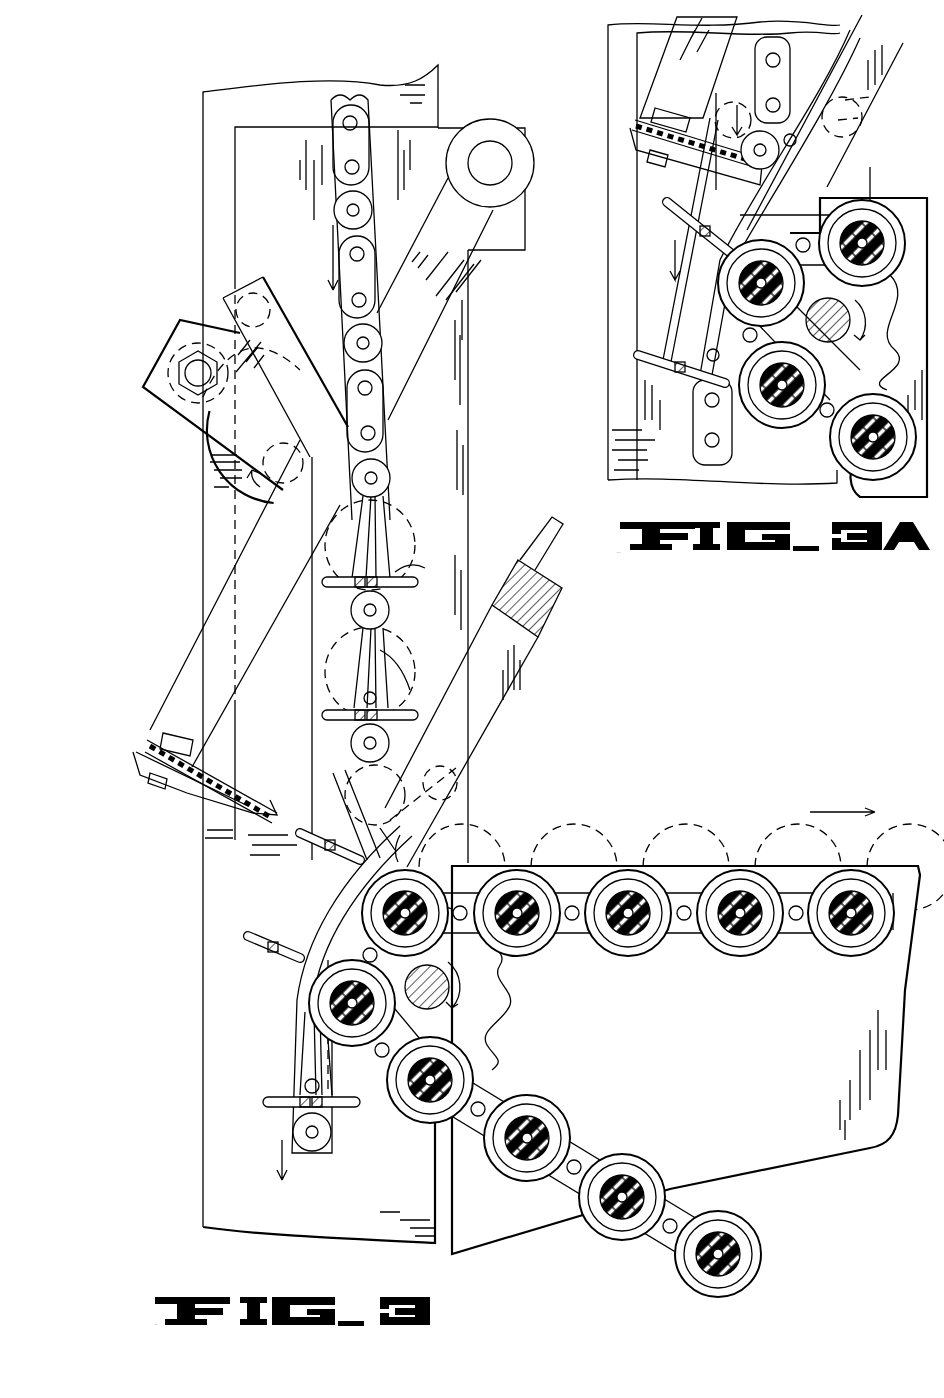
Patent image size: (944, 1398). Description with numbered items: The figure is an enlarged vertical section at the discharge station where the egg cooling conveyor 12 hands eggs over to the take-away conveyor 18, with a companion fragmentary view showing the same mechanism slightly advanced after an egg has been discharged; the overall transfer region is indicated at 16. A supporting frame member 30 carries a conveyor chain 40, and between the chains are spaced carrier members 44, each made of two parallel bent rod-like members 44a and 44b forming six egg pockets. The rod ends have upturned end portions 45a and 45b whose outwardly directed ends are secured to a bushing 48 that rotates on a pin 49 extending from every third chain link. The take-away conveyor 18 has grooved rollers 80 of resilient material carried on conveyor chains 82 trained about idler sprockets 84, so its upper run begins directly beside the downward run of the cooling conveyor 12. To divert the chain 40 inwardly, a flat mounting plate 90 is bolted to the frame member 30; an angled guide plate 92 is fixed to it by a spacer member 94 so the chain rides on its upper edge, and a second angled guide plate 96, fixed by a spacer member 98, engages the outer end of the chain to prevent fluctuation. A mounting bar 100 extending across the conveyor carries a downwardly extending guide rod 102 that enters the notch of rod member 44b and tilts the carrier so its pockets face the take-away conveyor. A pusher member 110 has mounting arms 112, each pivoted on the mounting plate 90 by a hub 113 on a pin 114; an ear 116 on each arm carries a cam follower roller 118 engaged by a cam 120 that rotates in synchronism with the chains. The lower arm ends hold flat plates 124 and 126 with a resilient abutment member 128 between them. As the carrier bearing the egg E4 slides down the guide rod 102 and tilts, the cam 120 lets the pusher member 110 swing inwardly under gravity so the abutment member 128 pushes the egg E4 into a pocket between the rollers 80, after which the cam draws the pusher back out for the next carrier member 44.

In FIG. 3, the egg cooling conveyor 12 is at (408, 548).
In FIG. 3A, the egg cooling conveyor 12 is at (670, 303).
In FIG. 3, the transfer assembly 16 is at (578, 680).
In FIG. 3A, the transfer assembly 16 is at (890, 147).
In FIG. 3, the take-away conveyor 18 is at (760, 890).
In FIG. 3A, the take-away conveyor 18 is at (915, 185).
In FIG. 3, the supporting frame member 30 is at (205, 113).
In FIG. 3A, the supporting frame member 30 is at (612, 45).
In FIG. 3, the conveyor chain 40 is at (333, 110).
In FIG. 3A, the conveyor chain 40 is at (790, 59).
In FIG. 3, the carrier member 44 is at (422, 582).
In FIG. 3A, the carrier member 44 is at (667, 316).
In FIG. 3, the rod-like member 44a is at (322, 582).
In FIG. 3A, the rod-like member 44a is at (680, 222).
In FIG. 3, the rod-like member 44b is at (258, 993).
In FIG. 3A, the rod-like member 44b is at (700, 236).
In FIG. 3, the upturned end portion 45a is at (352, 526).
In FIG. 3, the upturned end portion 45b is at (382, 526).
In FIG. 3, the bushing 48 is at (370, 205).
In FIG. 3A, the bushing 48 is at (700, 412).
In FIG. 3, the pin 49 is at (356, 212).
In FIG. 3A, the pin 49 is at (778, 148).
In FIG. 3, the grooved roller 80 is at (748, 955).
In FIG. 3A, the grooved roller 80 is at (815, 365).
In FIG. 3, the conveyor chain 82 is at (572, 935).
In FIG. 3A, the conveyor chain 82 is at (825, 420).
In FIG. 3, the idler sprocket 84 is at (500, 1005).
In FIG. 3A, the idler sprocket 84 is at (900, 334).
In FIG. 3, the mounting plate 90 is at (240, 170).
In FIG. 3A, the mounting plate 90 is at (637, 78).
In FIG. 3, the angled guide plate 92 is at (488, 722).
In FIG. 3A, the angled guide plate 92 is at (870, 92).
In FIG. 3, the spacer member 94 is at (470, 770).
In FIG. 3A, the spacer member 94 is at (872, 100).
In FIG. 3, the second angled guide plate 96 is at (298, 417).
In FIG. 3A, the second angled guide plate 96 is at (732, 55).
In FIG. 3, the spacer member 98 is at (250, 296).
In FIG. 3A, the spacer member 98 is at (788, 117).
In FIG. 3, the mounting bar 100 is at (556, 597).
In FIG. 3, the guide rod 102 is at (295, 1004).
In FIG. 3A, the guide rod 102 is at (695, 334).
In FIG. 3, the pusher member 110 is at (132, 751).
In FIG. 3A, the pusher member 110 is at (660, 140).
In FIG. 3, the mounting arm 112 is at (192, 667).
In FIG. 3A, the mounting arm 112 is at (700, 95).
In FIG. 3, the hub 113 is at (477, 130).
In FIG. 3, the pin 114 is at (505, 175).
In FIG. 3, the ear 116 is at (195, 355).
In FIG. 3, the cam follower roller 118 is at (200, 345).
In FIG. 3, the cam 120 is at (235, 473).
In FIG. 3, the flat plate 124 is at (165, 735).
In FIG. 3A, the flat plate 124 is at (640, 128).
In FIG. 3, the flat plate 126 is at (160, 772).
In FIG. 3A, the flat plate 126 is at (650, 142).
In FIG. 3, the resilient abutment member 128 is at (152, 744).
In FIG. 3A, the resilient abutment member 128 is at (632, 128).
In FIG. 3, the egg E4 is at (460, 806).
In FIG. 3A, the egg E4 is at (845, 170).